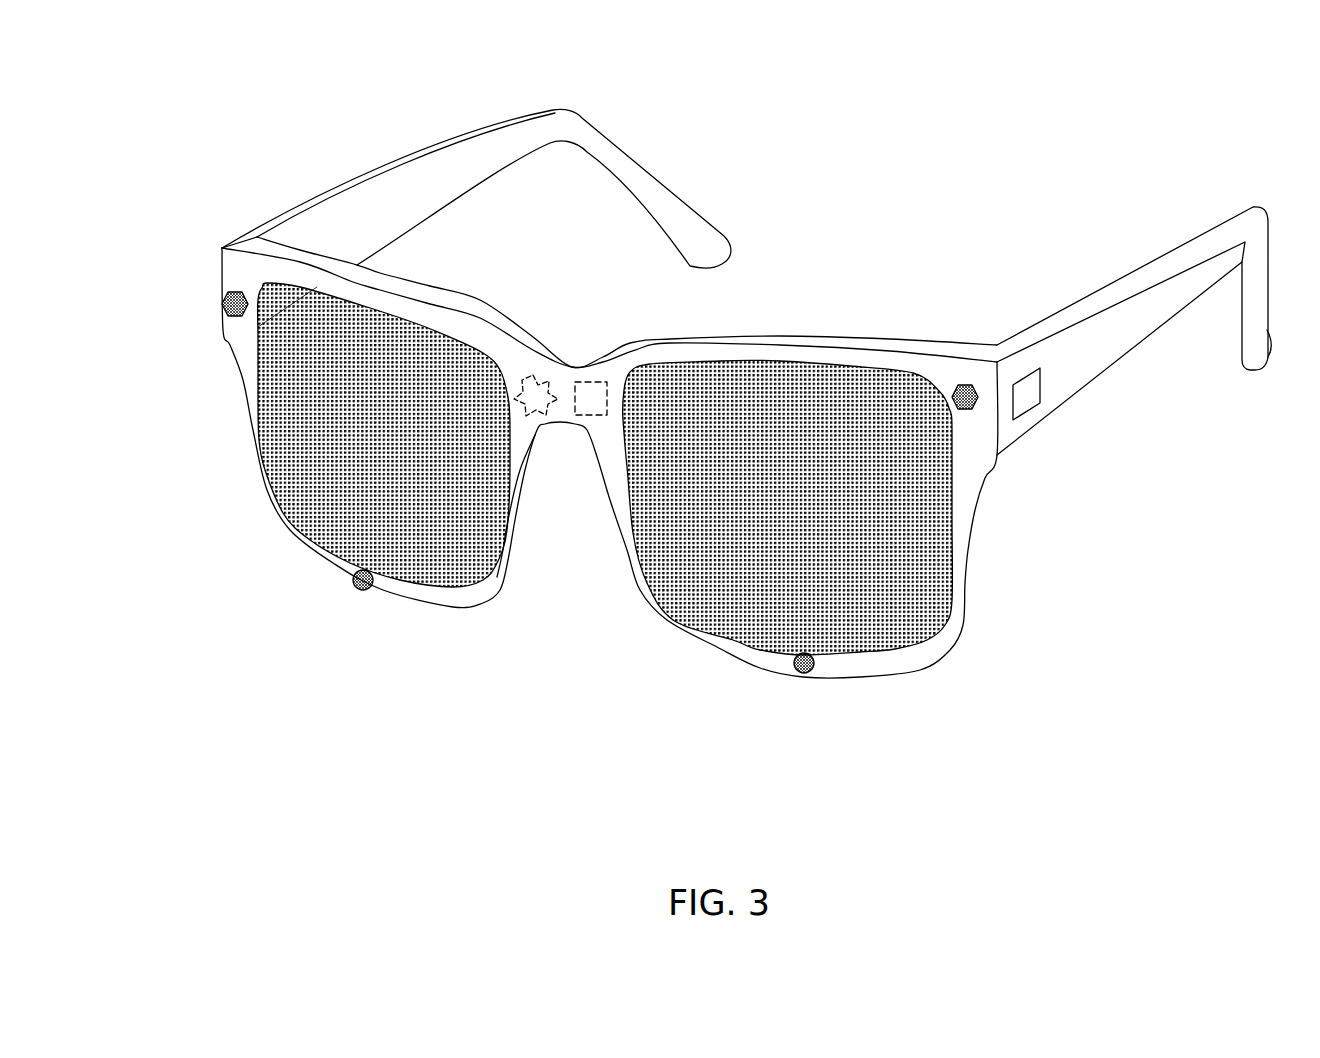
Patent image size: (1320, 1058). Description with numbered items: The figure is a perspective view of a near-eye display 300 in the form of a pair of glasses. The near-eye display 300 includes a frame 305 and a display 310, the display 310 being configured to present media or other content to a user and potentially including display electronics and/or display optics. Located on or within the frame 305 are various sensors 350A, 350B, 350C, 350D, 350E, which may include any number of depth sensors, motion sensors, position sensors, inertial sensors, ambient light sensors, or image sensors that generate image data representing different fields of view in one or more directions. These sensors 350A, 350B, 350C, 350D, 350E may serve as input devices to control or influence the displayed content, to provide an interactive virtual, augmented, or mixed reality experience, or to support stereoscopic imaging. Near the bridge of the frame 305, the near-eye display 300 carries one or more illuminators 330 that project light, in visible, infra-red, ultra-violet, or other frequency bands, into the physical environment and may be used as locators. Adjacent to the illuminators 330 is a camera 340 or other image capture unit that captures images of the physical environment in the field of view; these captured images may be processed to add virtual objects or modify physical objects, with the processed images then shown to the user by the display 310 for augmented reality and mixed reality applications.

The near-eye display 300 is at (675, 54).
The frame 305 is at (1043, 317).
The display 310 is at (328, 518).
The illuminator(s) 330 is at (526, 376).
The camera 340 is at (588, 388).
The sensor 350A is at (1027, 402).
The sensor 350B is at (805, 673).
The sensor 350C is at (364, 590).
The sensor 350D is at (230, 296).
The sensor 350E is at (963, 384).